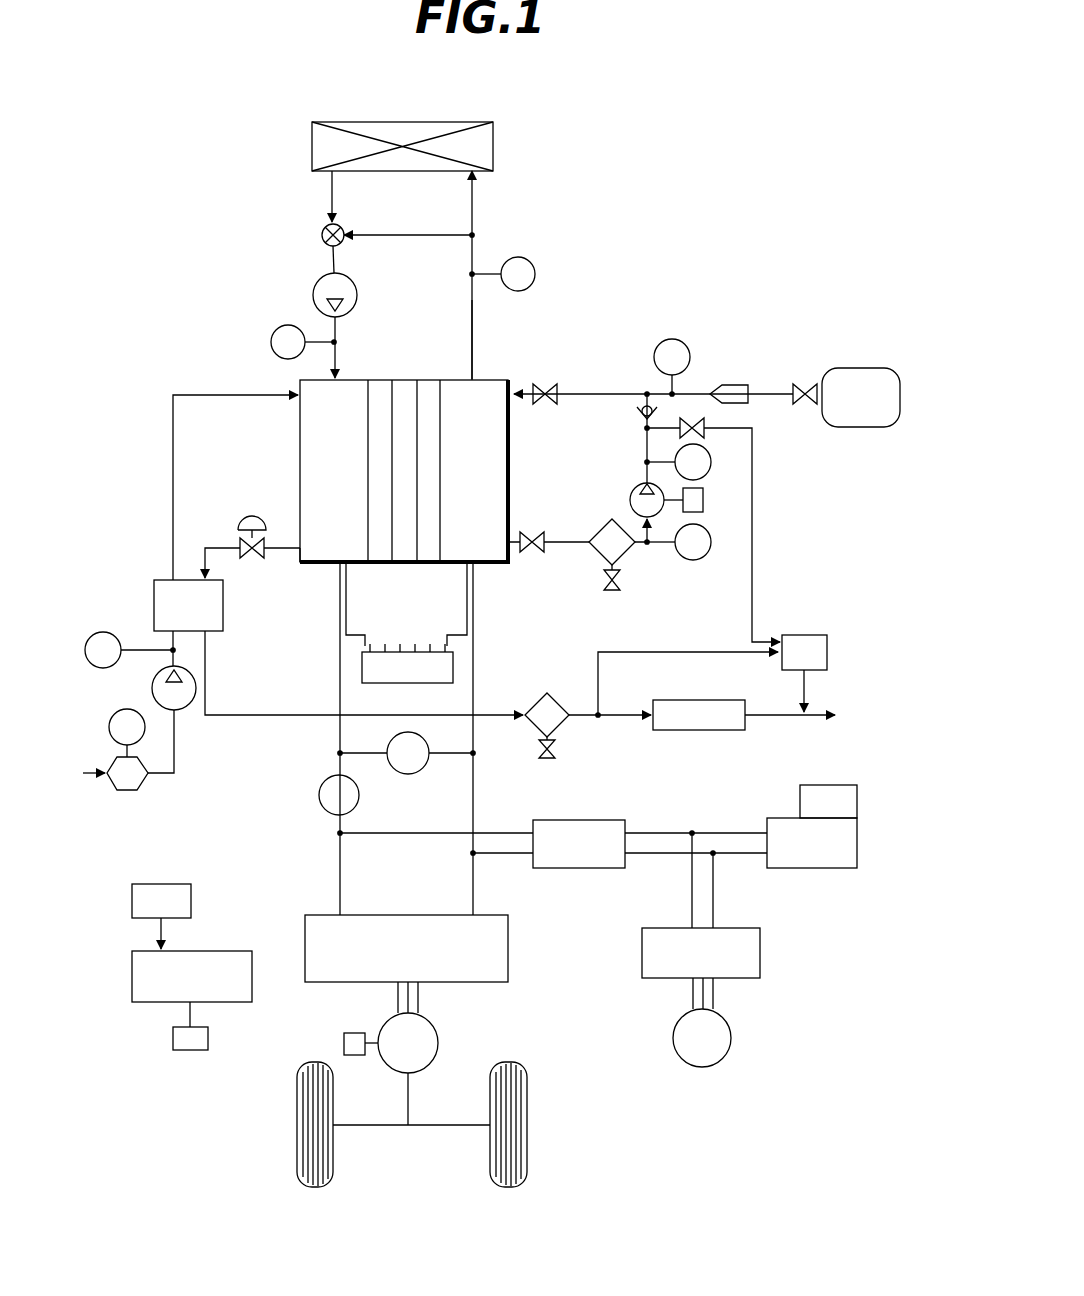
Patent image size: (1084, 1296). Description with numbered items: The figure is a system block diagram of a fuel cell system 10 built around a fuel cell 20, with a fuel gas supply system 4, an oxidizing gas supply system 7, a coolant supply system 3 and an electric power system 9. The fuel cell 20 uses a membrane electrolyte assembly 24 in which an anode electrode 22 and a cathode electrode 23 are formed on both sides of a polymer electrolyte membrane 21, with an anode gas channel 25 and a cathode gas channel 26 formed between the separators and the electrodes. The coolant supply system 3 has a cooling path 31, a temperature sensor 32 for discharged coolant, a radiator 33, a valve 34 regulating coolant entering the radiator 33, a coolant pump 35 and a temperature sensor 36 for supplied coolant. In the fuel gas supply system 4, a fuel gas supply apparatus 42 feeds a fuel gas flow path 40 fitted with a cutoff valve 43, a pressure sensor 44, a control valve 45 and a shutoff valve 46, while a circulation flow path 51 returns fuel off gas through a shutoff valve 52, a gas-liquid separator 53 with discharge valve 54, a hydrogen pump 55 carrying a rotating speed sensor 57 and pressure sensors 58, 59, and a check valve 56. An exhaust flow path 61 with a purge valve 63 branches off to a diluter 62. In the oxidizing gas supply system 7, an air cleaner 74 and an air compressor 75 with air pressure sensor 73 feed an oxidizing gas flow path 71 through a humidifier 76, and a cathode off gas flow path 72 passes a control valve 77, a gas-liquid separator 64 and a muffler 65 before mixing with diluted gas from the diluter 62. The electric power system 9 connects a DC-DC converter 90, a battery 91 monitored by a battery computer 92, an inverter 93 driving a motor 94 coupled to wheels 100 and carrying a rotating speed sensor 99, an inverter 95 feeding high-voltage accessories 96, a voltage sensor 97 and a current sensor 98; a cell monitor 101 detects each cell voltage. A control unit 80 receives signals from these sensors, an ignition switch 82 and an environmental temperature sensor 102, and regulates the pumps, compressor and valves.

The fuel cell system 10 is at (720, 172).
The coolant supply system 3 is at (396, 302).
The fuel gas supply system 4 is at (528, 452).
The oxidizing gas supply system 7 is at (191, 440).
The electric power system 9 is at (398, 887).
The fuel cell 20 is at (400, 380).
The polymer electrolyte membrane 21 is at (405, 566).
The anode electrode 22 is at (430, 566).
The cathode electrode 23 is at (378, 566).
The membrane electrolyte assembly 24 is at (458, 608).
The anode gas channel 25 is at (495, 565).
The cathode gas channel 26 is at (320, 565).
The cooling path 31 is at (476, 330).
The temperature sensor 32 is at (525, 258).
The radiator 33 is at (495, 155).
The valve 34 is at (322, 228).
The coolant pump 35 is at (313, 286).
The temperature sensor 36 is at (276, 328).
The fuel gas flow path 40 is at (610, 394).
The fuel gas supply apparatus 42 is at (855, 368).
The cutoff valve 43 is at (800, 384).
The pressure sensor 44 is at (662, 345).
The control valve 45 is at (725, 386).
The shutoff valve 46 is at (542, 388).
The circulation flow path 51 is at (560, 545).
The shutoff valve 52 is at (530, 535).
The gas-liquid separator 53 is at (602, 528).
The discharge valve 54 is at (612, 592).
The hydrogen pump 55 is at (635, 488).
The check valve 56 is at (640, 416).
The rotating speed sensor 57 is at (703, 505).
The pressure sensor 58 is at (700, 560).
The pressure sensor 59 is at (712, 463).
The exhaust flow path 61 is at (755, 495).
The diluter 62 is at (805, 635).
The purge valve 63 is at (706, 424).
The gas-liquid separator 64 is at (565, 740).
The muffler 65 is at (710, 731).
The oxidizing gas flow path 71 is at (185, 395).
The cathode off gas flow path 72 is at (290, 548).
The air pressure sensor 73 is at (100, 632).
The air cleaner 74 is at (128, 791).
The air compressor 75 is at (180, 708).
The humidifier 76 is at (160, 580).
The control valve 77 is at (248, 516).
The control unit 80 is at (208, 951).
The ignition switch 82 is at (191, 892).
The DC-DC converter 90 is at (548, 820).
The battery 91 is at (772, 818).
The battery computer 92 is at (835, 785).
The inverter 93 is at (510, 947).
The motor 94 is at (440, 1045).
The inverter 95 is at (762, 958).
The high-voltage accessories 96 is at (732, 1040).
The voltage sensor 97 is at (420, 772).
The current sensor 98 is at (358, 800).
The rotating speed sensor 99 is at (344, 1043).
The wheels 100 is at (527, 1092).
The cell monitor 101 is at (403, 684).
The temperature sensor 102 is at (208, 1038).